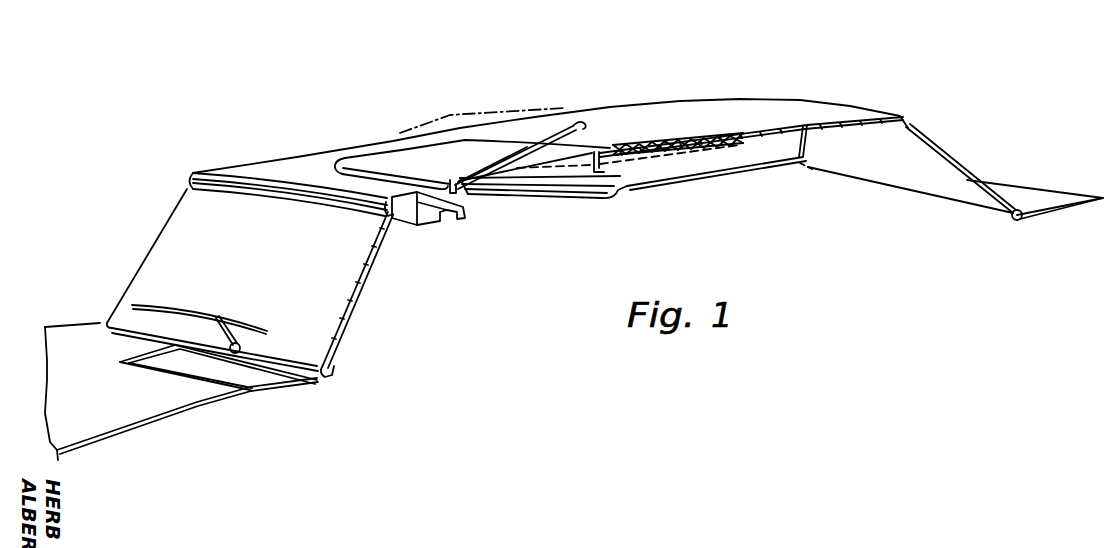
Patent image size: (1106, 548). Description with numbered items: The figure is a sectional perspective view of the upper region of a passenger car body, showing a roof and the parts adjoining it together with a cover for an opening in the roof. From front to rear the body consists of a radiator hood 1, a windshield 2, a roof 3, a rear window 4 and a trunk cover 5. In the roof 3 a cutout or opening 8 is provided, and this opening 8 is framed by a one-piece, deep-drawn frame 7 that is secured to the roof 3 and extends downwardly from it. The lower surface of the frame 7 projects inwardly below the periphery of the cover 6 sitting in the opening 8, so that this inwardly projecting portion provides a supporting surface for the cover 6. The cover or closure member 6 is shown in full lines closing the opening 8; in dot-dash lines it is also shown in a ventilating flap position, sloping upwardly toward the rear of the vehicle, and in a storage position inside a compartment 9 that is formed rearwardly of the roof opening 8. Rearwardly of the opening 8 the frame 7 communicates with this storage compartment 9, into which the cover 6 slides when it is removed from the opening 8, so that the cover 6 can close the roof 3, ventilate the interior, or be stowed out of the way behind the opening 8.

The radiator hood 1 is at (173, 404).
The windshield 2 is at (170, 241).
The roof 3 is at (650, 120).
The rear window 4 is at (959, 167).
The trunk cover 5 is at (1020, 196).
The cover 6 is at (424, 158).
The frame 7 is at (428, 227).
The opening 8 is at (610, 150).
The storage compartment 9 is at (692, 183).